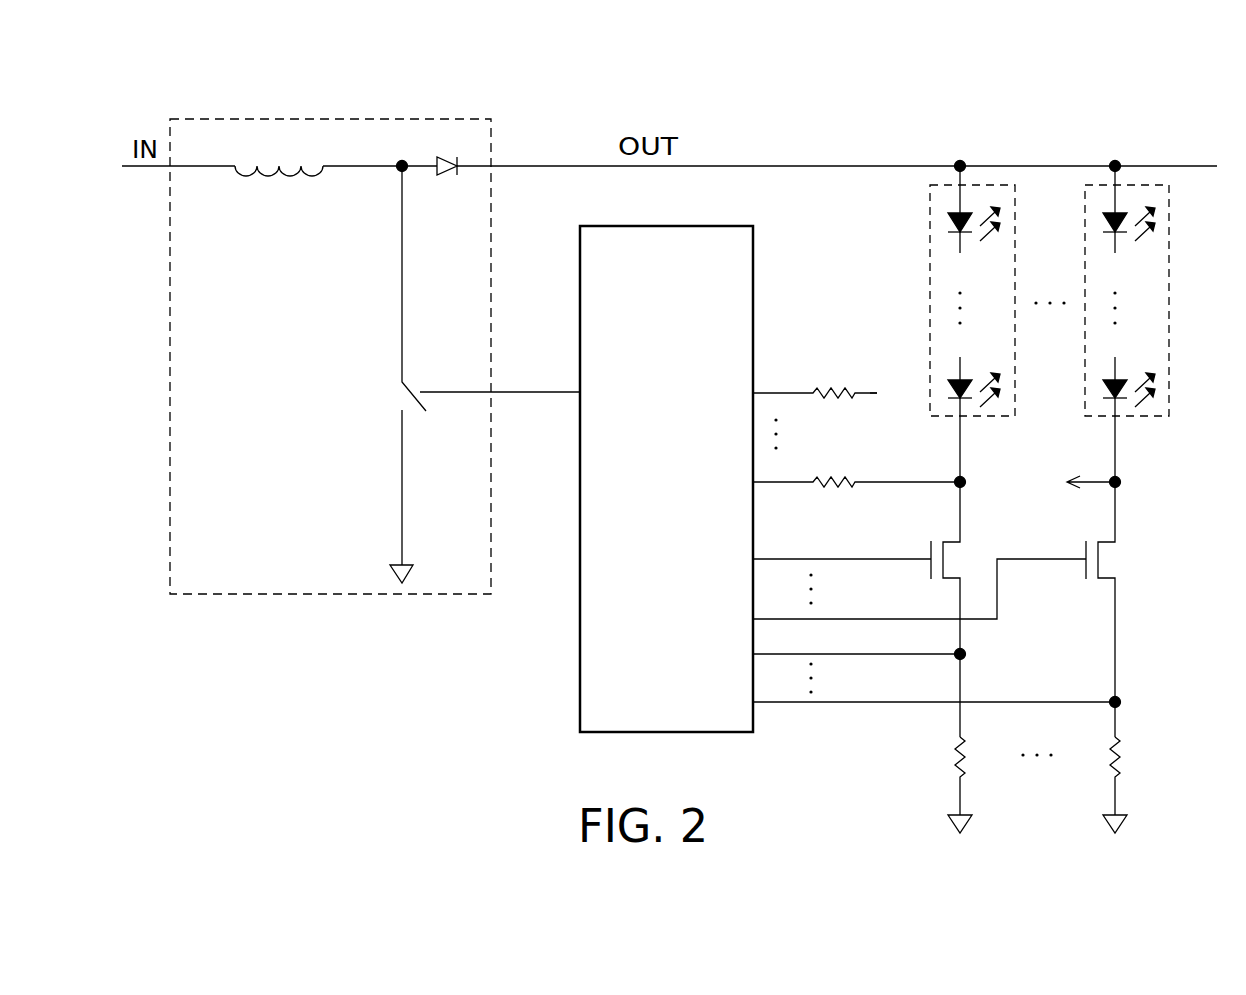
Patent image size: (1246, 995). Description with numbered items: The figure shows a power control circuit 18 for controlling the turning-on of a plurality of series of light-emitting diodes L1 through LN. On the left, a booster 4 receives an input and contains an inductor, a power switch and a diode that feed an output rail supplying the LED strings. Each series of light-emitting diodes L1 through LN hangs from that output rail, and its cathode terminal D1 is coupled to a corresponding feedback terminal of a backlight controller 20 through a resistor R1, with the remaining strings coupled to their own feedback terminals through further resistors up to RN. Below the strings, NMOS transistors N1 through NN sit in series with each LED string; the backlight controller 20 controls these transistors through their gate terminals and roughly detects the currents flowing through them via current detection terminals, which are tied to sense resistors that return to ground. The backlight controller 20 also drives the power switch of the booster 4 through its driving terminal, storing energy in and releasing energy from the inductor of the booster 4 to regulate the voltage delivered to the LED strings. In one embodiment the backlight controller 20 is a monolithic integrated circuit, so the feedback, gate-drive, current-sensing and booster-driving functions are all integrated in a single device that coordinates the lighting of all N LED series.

The booster 4 is at (420, 118).
The power control circuit 18 is at (826, 96).
The backlight controller 20 is at (753, 258).
The series of light-emitting diodes L1 is at (990, 186).
The series of light-emitting diodes LN is at (1145, 186).
The resistor R1 is at (826, 477).
The resistor RN is at (826, 388).
The cathode terminal D1 is at (976, 486).
The NMOS transistor N1 is at (955, 562).
The NMOS transistor NN is at (1110, 562).